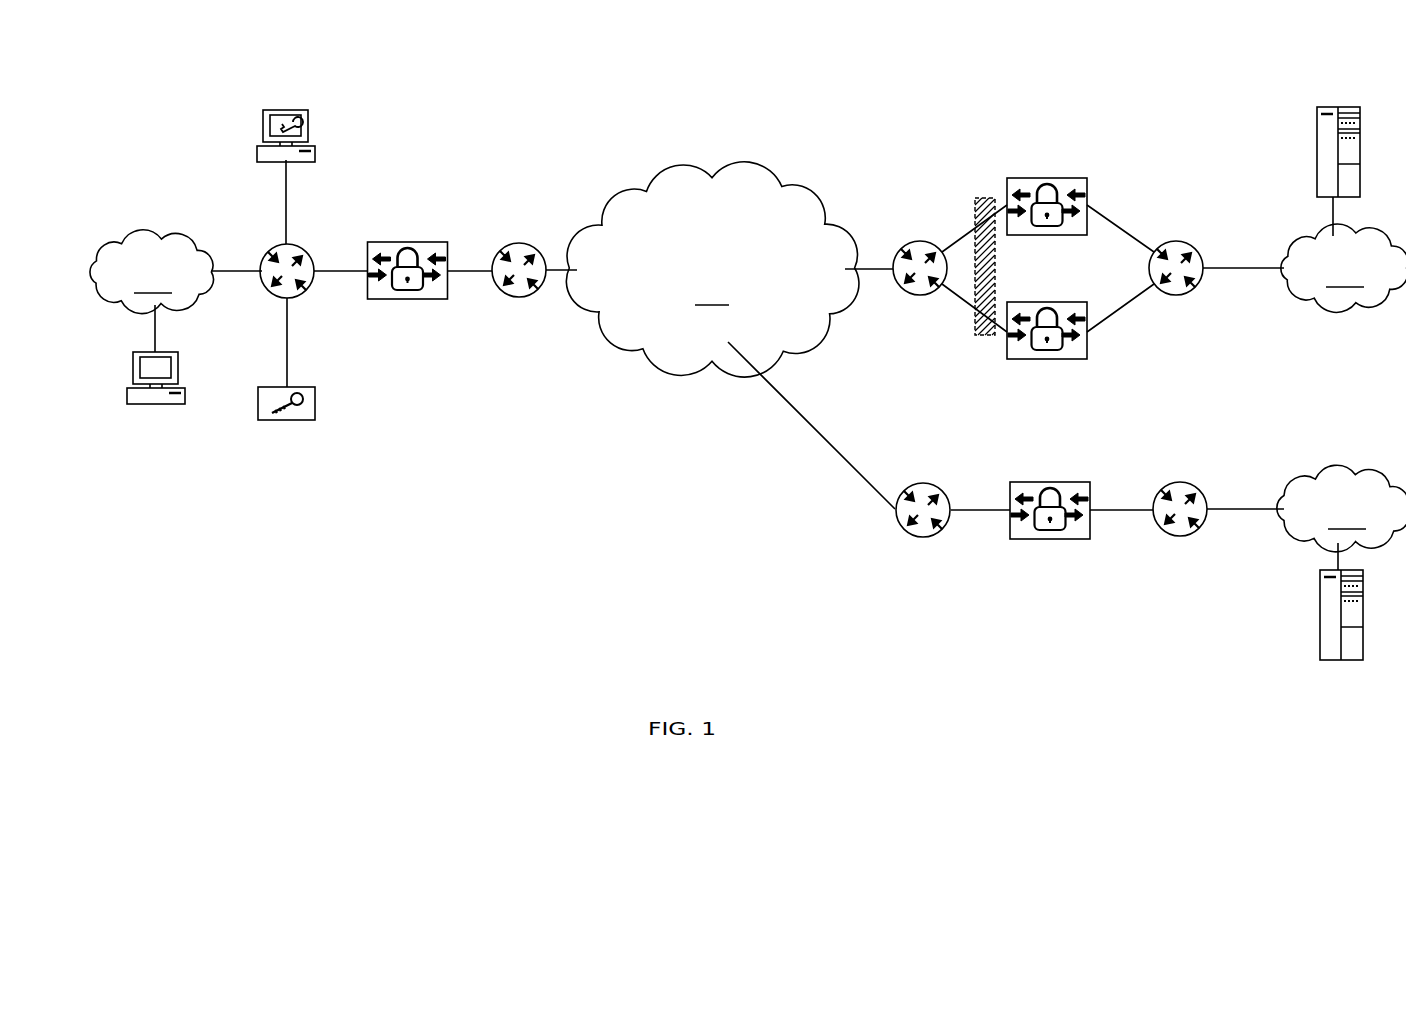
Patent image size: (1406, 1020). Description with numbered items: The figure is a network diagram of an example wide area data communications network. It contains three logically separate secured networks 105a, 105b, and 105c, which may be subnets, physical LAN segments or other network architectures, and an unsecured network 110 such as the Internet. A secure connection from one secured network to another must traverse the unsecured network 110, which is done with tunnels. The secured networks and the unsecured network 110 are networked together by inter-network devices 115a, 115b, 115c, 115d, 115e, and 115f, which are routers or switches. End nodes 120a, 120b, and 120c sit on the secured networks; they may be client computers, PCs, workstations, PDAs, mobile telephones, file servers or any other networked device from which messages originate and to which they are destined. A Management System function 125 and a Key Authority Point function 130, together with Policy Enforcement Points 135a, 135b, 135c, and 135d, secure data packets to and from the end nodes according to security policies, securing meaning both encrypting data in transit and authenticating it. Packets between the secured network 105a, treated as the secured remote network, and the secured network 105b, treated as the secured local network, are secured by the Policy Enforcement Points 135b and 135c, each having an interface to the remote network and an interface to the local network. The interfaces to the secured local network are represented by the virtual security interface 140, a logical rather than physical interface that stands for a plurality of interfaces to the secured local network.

The secured network 105a is at (151, 272).
The secured network 105b is at (1343, 268).
The secured network 105c is at (1341, 508).
The unsecured network 110 is at (712, 269).
The inter-network device 115a is at (312, 250).
The inter-network device 115b is at (540, 246).
The inter-network device 115c is at (904, 240).
The inter-network device 115d is at (1195, 240).
The inter-network device 115e is at (933, 482).
The inter-network device 115f is at (1200, 483).
The end node 120a is at (160, 407).
The end node 120b is at (1340, 107).
The end node 120c is at (1350, 660).
The Management System (PAMS) function 125 is at (290, 112).
The Key Authority Point (KAP) function 130 is at (290, 420).
The Policy Enforcement Point 135a is at (415, 300).
The Policy Enforcement Point 135b is at (1052, 177).
The Policy Enforcement Point 135c is at (1052, 358).
The Policy Enforcement Point 135d is at (1050, 538).
The virtual security interface 140 is at (985, 198).